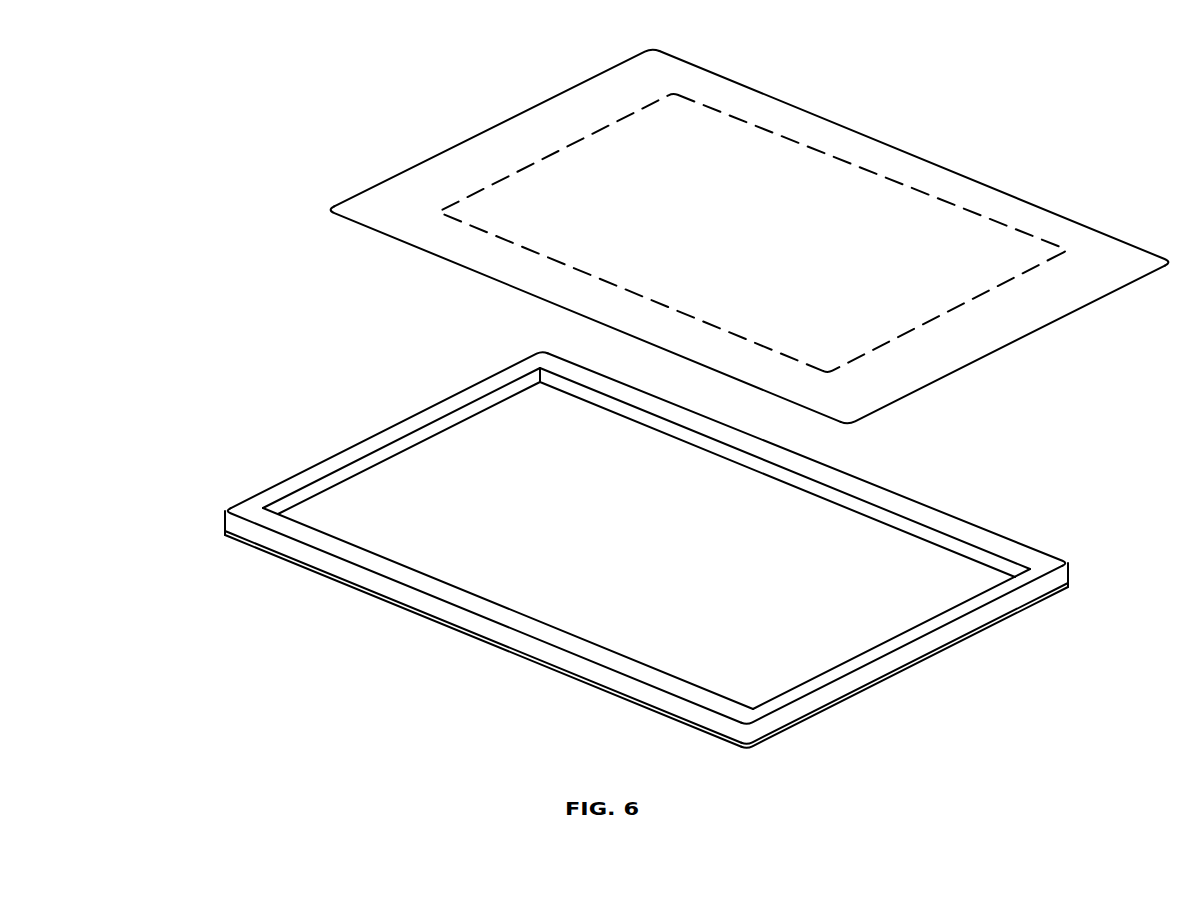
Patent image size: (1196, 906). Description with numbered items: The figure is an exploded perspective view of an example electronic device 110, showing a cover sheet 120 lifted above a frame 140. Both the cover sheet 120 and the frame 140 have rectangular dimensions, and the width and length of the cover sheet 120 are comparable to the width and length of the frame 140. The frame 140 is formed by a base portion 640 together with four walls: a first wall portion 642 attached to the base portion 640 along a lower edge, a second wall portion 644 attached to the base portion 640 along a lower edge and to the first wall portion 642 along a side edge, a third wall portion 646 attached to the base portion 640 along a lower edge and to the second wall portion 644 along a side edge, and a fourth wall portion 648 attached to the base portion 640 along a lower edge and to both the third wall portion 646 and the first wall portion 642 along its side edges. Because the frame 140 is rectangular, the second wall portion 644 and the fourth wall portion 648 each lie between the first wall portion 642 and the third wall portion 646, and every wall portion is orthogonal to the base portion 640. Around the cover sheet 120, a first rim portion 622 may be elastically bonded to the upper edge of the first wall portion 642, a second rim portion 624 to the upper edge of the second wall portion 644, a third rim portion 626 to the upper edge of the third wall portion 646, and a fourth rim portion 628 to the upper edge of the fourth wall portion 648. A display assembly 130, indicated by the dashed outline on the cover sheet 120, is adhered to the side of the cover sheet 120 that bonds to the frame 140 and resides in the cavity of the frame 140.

The electronic device 110 is at (659, 399).
The cover sheet 120 is at (712, 237).
The display assembly 130 is at (610, 106).
The frame 140 is at (608, 550).
The first rim portion 622 is at (463, 268).
The second rim portion 624 is at (455, 145).
The third rim portion 626 is at (942, 166).
The fourth rim portion 628 is at (1033, 333).
The base portion 640 is at (583, 542).
The first wall portion 642 is at (438, 593).
The second wall portion 644 is at (368, 443).
The third wall portion 646 is at (948, 522).
The fourth wall portion 648 is at (917, 633).